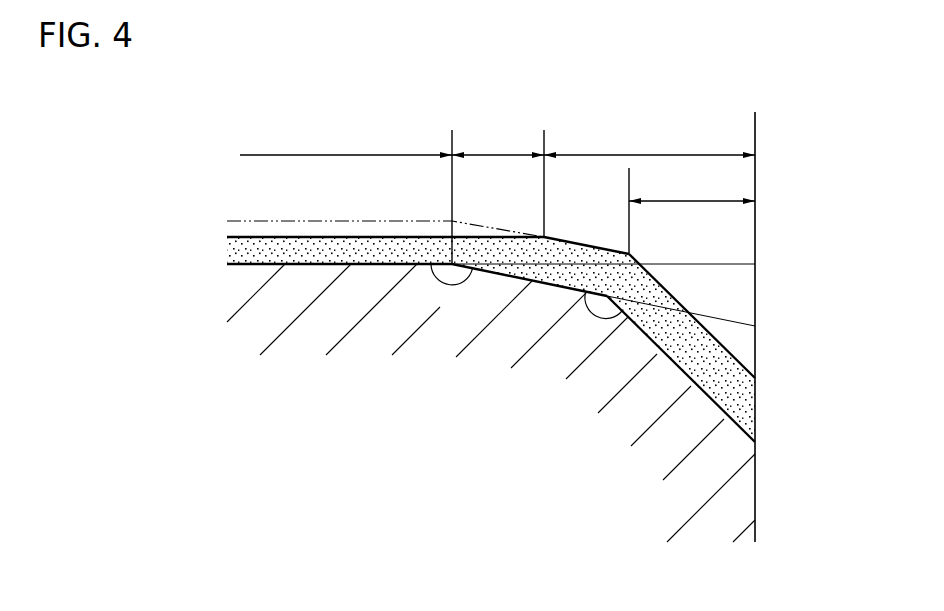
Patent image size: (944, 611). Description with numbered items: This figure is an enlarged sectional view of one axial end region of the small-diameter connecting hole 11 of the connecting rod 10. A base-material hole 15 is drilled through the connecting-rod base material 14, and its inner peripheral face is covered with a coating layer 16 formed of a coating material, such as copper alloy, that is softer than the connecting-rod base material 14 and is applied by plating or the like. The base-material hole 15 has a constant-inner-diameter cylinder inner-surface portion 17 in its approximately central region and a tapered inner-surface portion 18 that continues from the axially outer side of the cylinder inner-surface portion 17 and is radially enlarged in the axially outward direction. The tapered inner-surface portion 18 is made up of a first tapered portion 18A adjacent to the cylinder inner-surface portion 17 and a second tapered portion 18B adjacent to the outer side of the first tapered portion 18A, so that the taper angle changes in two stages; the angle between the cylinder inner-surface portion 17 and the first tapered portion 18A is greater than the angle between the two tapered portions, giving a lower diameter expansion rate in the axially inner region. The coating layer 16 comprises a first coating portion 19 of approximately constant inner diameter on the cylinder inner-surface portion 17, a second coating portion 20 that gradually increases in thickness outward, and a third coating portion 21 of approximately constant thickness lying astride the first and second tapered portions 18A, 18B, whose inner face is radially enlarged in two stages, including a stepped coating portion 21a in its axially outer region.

The connecting rod 10 is at (385, 165).
The small-diameter connecting hole 11 is at (398, 180).
The connecting-rod base material 14 is at (432, 347).
The base-material hole 15 is at (353, 250).
The coating layer 16 is at (252, 250).
The cylinder inner-surface portion 17 is at (328, 250).
The tapered inner-surface portion 18 is at (660, 252).
The first tapered portion 18A is at (562, 268).
The second tapered portion 18B is at (685, 367).
The first coating portion 19 is at (267, 155).
The second coating portion 20 is at (495, 155).
The third coating portion 21 is at (645, 155).
The stepped coating portion 21a is at (687, 201).